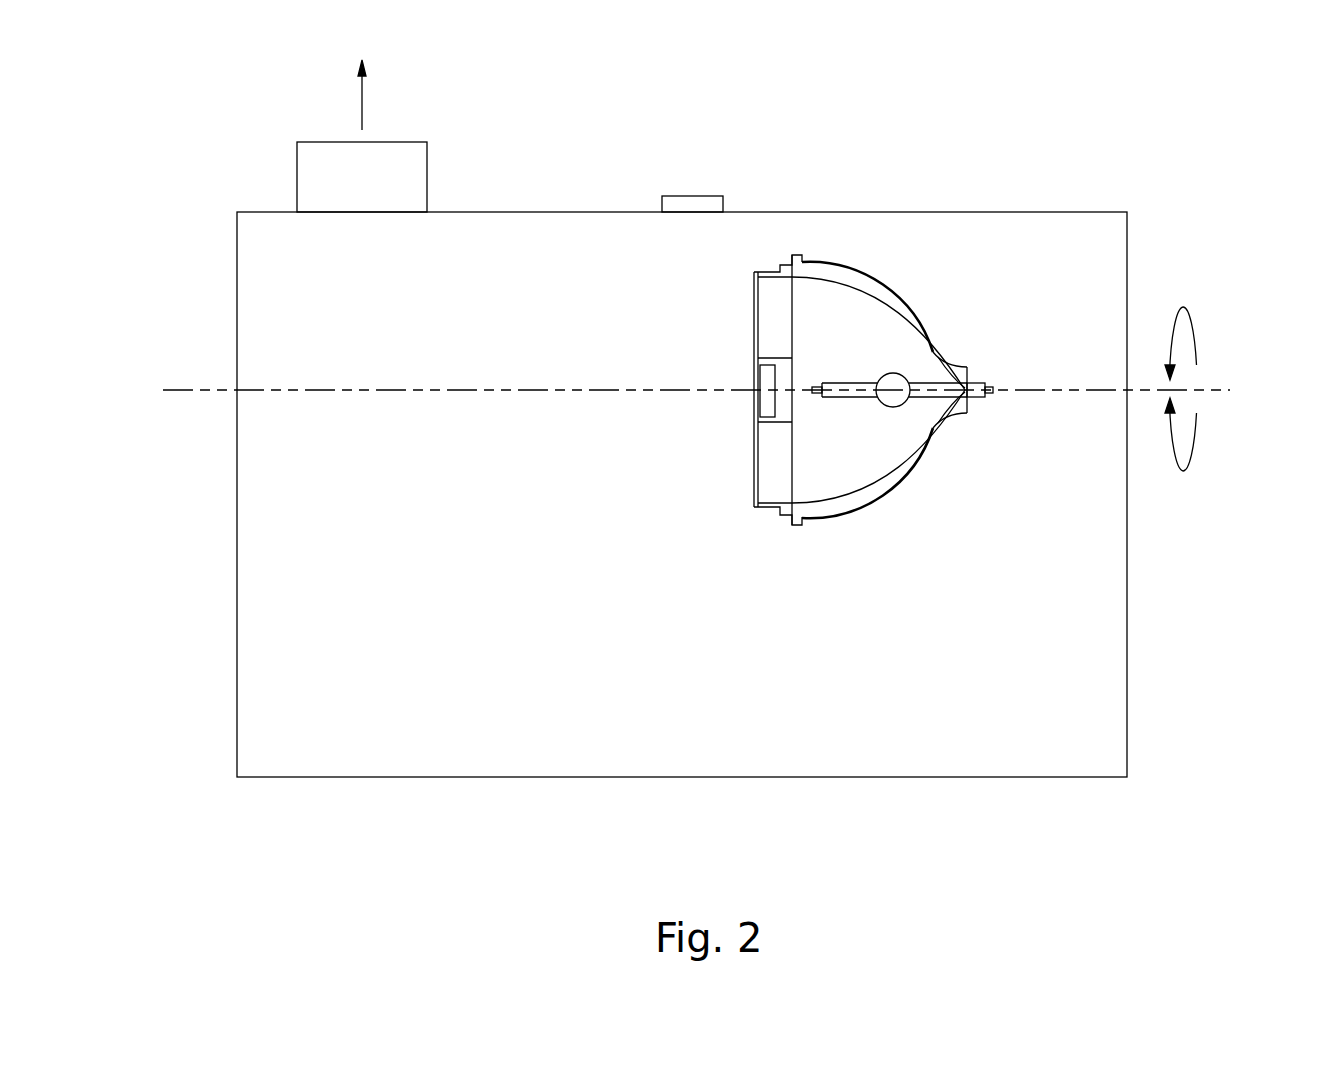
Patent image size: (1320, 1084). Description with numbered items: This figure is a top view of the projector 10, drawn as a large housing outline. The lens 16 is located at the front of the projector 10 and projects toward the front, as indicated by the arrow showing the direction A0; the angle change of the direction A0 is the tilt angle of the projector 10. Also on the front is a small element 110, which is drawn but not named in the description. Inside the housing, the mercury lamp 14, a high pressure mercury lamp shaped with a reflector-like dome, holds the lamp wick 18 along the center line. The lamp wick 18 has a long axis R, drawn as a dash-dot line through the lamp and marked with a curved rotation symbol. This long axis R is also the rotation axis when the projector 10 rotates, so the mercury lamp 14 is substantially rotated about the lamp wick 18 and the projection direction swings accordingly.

The projector 10 is at (148, 68).
The lens 16 is at (400, 175).
The opening 110 is at (697, 202).
The mercury lamp 14 is at (942, 300).
The lamp wick 18 is at (857, 393).
The direction A0 is at (362, 100).
The long axis R is at (1215, 389).